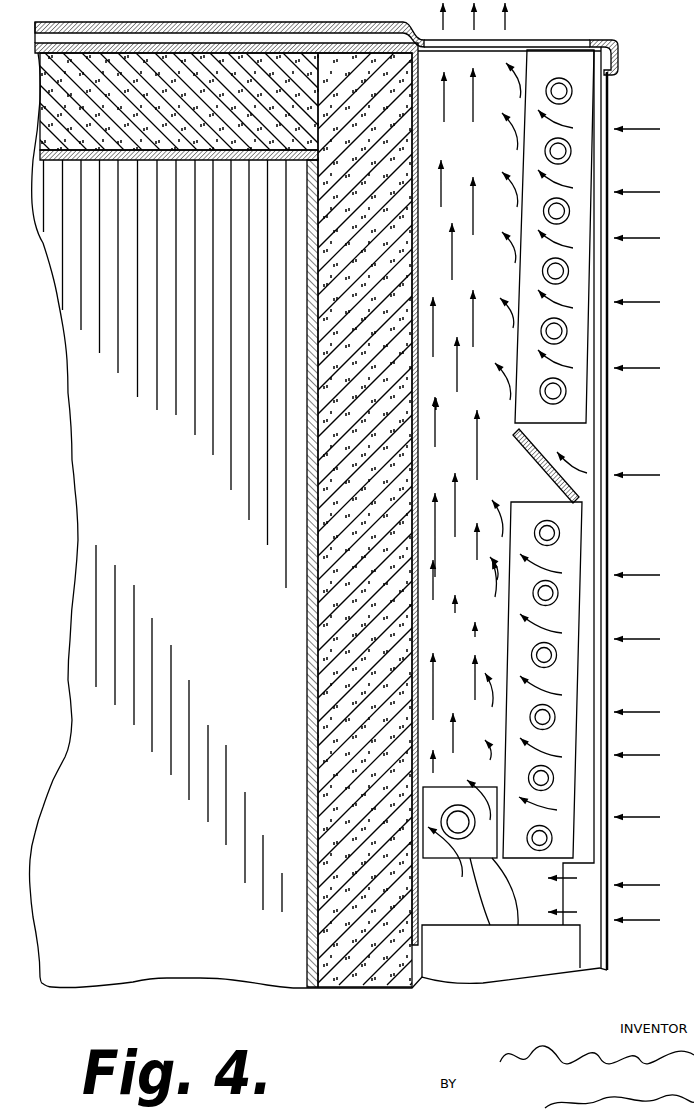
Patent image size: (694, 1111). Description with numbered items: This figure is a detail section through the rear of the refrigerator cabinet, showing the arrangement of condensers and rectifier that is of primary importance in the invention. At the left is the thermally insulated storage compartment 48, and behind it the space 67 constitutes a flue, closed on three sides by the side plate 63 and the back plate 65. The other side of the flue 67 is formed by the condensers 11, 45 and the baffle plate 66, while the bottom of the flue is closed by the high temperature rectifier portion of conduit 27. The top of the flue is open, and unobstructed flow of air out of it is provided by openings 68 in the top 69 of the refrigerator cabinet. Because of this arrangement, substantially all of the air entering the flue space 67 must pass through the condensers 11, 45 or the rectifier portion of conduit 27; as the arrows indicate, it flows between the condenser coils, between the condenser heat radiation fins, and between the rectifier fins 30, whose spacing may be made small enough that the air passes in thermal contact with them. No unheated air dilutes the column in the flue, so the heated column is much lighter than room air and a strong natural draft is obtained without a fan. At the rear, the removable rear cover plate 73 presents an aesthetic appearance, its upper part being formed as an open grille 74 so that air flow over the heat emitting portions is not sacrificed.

The condenser 11 is at (584, 98).
The conduit 27 is at (517, 889).
The rectifier fins 30 is at (458, 792).
The condenser 45 is at (559, 594).
The storage compartment 48 is at (97, 453).
The side plate 63 is at (587, 434).
The back plate 65 is at (412, 888).
The baffle plate 66 is at (538, 448).
The flue space 67 is at (513, 62).
The openings 68 is at (583, 42).
The top 69 is at (370, 24).
The rear cover plate 73 is at (606, 975).
The grille 74 is at (607, 524).